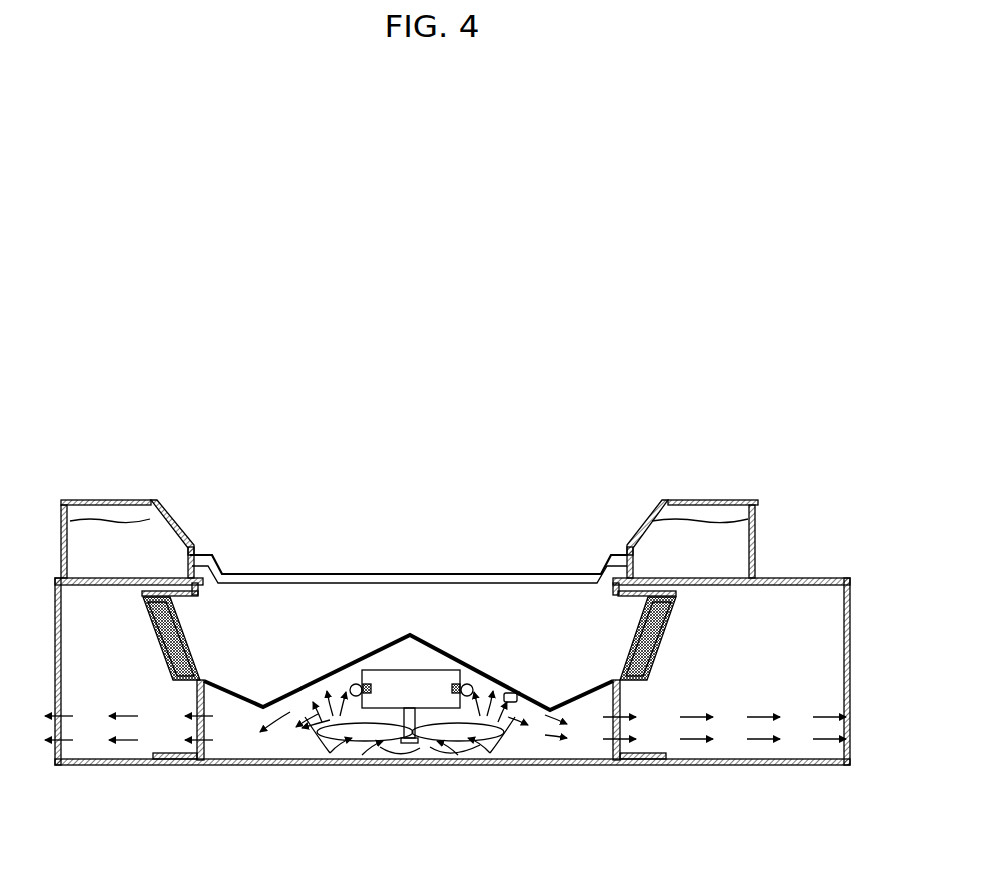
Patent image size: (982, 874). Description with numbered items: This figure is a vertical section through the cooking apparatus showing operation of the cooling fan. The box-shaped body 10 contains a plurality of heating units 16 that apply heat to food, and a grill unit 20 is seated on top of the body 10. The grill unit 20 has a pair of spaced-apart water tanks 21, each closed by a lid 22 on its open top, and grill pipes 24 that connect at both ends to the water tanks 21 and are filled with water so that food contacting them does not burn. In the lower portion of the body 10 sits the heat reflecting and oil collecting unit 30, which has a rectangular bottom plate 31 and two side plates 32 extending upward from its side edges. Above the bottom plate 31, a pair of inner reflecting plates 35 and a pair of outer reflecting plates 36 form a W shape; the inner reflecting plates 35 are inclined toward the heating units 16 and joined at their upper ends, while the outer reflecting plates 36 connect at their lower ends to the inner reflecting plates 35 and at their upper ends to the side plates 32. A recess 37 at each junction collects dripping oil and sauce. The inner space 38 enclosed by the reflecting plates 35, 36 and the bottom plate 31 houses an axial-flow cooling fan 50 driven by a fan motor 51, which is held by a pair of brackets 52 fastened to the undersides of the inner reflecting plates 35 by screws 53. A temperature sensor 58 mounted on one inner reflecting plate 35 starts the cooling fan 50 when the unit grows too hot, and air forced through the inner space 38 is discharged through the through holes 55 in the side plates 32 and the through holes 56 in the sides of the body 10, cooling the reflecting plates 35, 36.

The body 10 is at (857, 605).
The heating unit 16 is at (150, 633).
The grill unit 20 is at (417, 505).
The water tank 21 is at (62, 549).
The lid 22 is at (112, 500).
The grill pipe 24 is at (537, 574).
The heat reflecting and oil collecting unit 30 is at (470, 769).
The bottom plate 31 is at (338, 745).
The side plate 32 is at (220, 679).
The inner reflecting plate 35 is at (343, 668).
The outer reflecting plate 36 is at (247, 686).
The recess 37 is at (262, 688).
The inner space 38 is at (225, 743).
The cooling fan 50 is at (428, 745).
The fan motor 51 is at (391, 712).
The bracket 52 is at (356, 684).
The screw 53 is at (362, 686).
The through hole 55 is at (213, 747).
The through hole 56 is at (48, 742).
The temperature sensor 58 is at (510, 702).